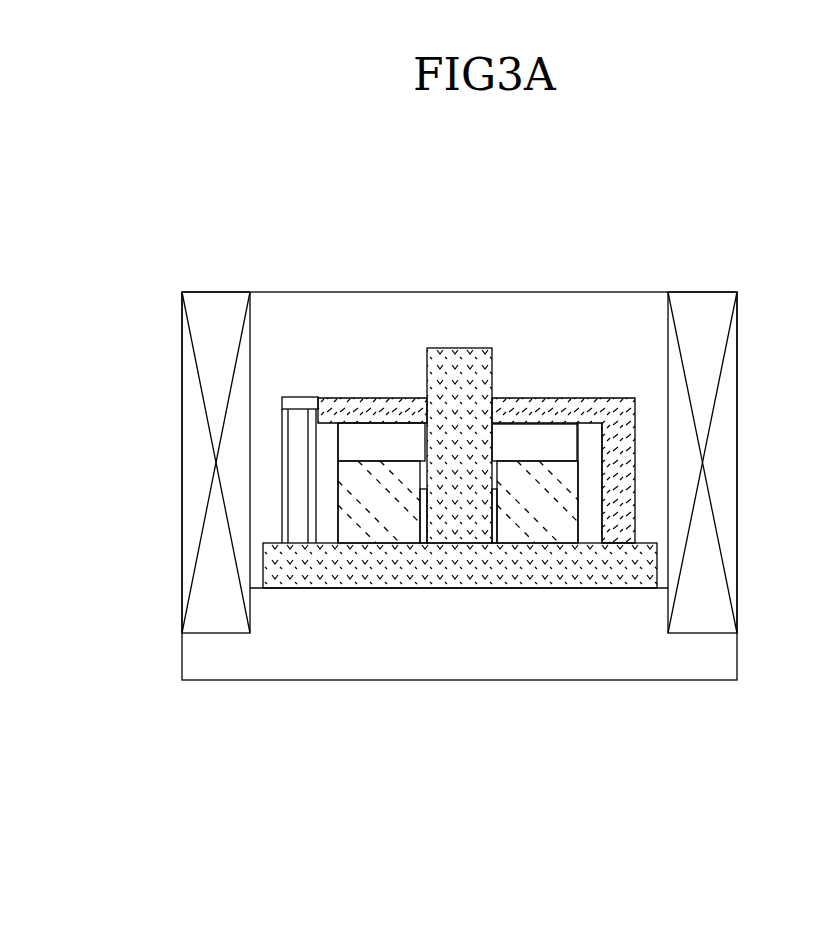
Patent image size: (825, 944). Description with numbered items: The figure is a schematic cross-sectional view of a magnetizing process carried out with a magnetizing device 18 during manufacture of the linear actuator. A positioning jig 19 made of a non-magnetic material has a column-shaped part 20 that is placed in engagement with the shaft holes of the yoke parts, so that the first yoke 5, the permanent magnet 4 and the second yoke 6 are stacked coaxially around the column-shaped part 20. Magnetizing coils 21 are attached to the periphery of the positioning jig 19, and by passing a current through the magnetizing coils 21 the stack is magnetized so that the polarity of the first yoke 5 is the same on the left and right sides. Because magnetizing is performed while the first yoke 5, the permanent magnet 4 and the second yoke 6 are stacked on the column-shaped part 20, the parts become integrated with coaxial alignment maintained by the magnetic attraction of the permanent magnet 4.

The permanent magnet 4 is at (353, 437).
The first yoke 5 is at (378, 518).
The second yoke 6 is at (390, 407).
The magnetizing device 18 is at (673, 268).
The positioning jig 19 is at (575, 572).
The column-shaped part 20 is at (453, 362).
The magnetizing coil 21 is at (210, 437).